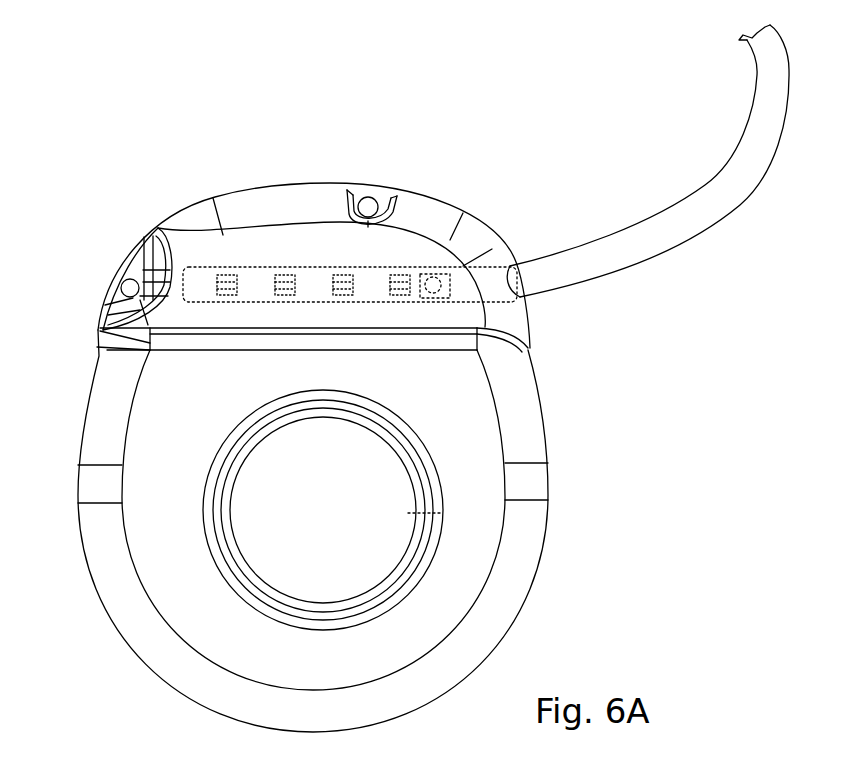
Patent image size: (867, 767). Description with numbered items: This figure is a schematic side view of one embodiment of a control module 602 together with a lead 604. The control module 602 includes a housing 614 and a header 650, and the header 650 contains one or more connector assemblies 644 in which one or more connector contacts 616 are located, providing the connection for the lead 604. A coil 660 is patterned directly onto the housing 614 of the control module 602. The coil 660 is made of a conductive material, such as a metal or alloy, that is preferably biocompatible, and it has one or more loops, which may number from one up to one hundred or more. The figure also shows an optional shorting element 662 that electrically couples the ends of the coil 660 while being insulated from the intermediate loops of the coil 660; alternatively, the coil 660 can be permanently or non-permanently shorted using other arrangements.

The control module 602 is at (75, 214).
The lead 604 is at (628, 248).
The housing 614 is at (533, 403).
The connector contacts 616 is at (225, 283).
The connector assemblies 644 is at (407, 268).
The header 650 is at (292, 195).
The coil 660 is at (440, 487).
The shorting element 662 is at (437, 513).